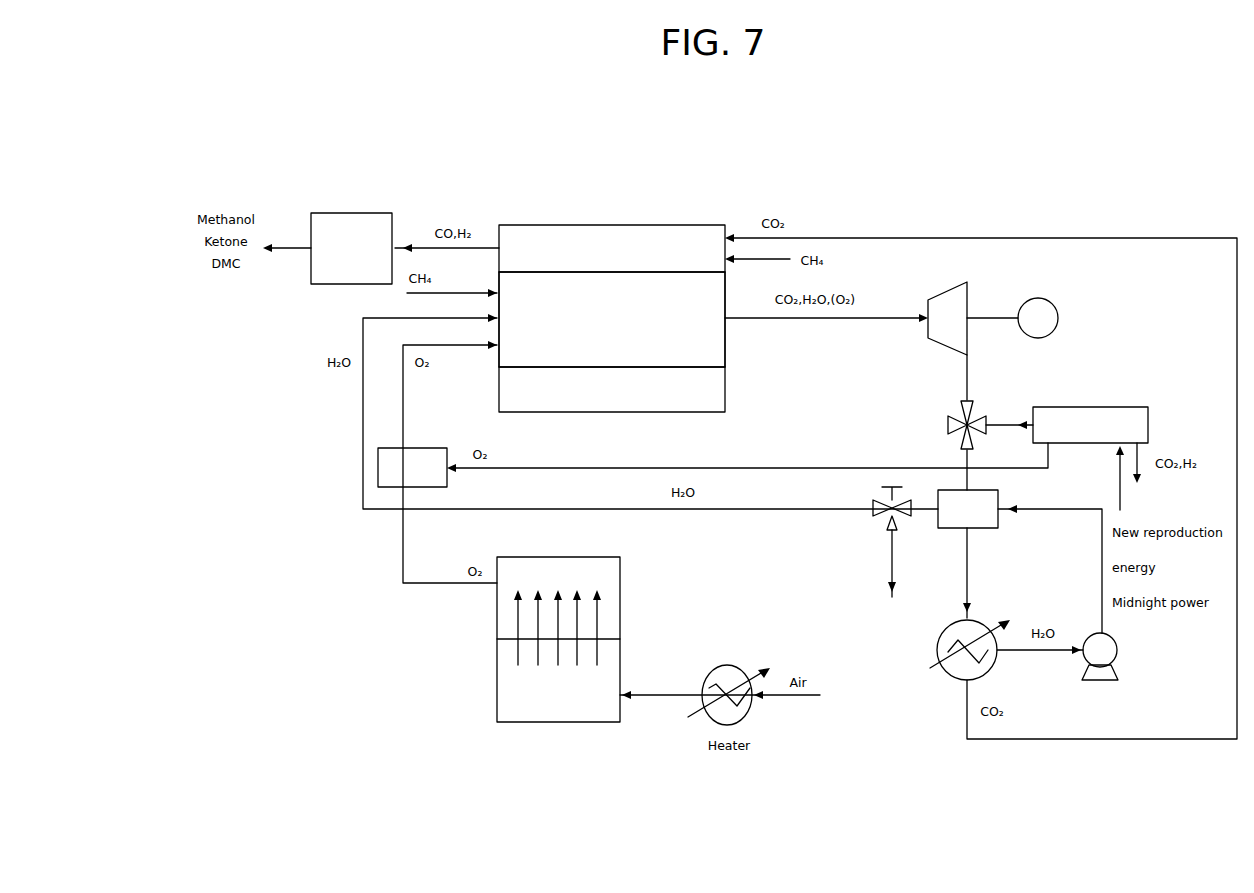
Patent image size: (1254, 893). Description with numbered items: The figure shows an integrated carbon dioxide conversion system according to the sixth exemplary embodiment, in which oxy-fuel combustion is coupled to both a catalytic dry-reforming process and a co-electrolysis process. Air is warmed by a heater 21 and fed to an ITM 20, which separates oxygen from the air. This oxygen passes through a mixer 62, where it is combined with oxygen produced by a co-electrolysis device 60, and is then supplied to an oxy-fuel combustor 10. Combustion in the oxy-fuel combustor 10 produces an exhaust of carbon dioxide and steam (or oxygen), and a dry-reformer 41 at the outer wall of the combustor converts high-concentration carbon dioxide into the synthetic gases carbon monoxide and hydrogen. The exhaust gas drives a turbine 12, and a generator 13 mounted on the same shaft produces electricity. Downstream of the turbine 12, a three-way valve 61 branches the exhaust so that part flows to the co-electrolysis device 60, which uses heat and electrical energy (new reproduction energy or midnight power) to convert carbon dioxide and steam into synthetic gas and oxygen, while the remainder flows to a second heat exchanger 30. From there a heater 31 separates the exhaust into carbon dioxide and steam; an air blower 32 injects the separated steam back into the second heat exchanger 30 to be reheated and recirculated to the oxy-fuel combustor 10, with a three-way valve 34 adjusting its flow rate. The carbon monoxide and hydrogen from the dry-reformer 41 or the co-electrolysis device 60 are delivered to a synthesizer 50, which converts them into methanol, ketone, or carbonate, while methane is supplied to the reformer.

The oxy-fuel combustor 10 is at (725, 343).
The turbine 12 is at (955, 282).
The generator 13 is at (1058, 312).
The ITM 20 is at (622, 575).
The heater 21 is at (725, 665).
The second heat exchanger 30 is at (985, 528).
The heater 31 is at (946, 676).
The air blower 32 is at (1118, 656).
The 3-way valve 34 is at (878, 520).
The dry-reformer 41 is at (606, 225).
The synthesizer 50 is at (349, 213).
The co-electrolysis device 60 is at (1107, 407).
The 3-way valve 61 is at (957, 413).
The mixer 62 is at (427, 448).